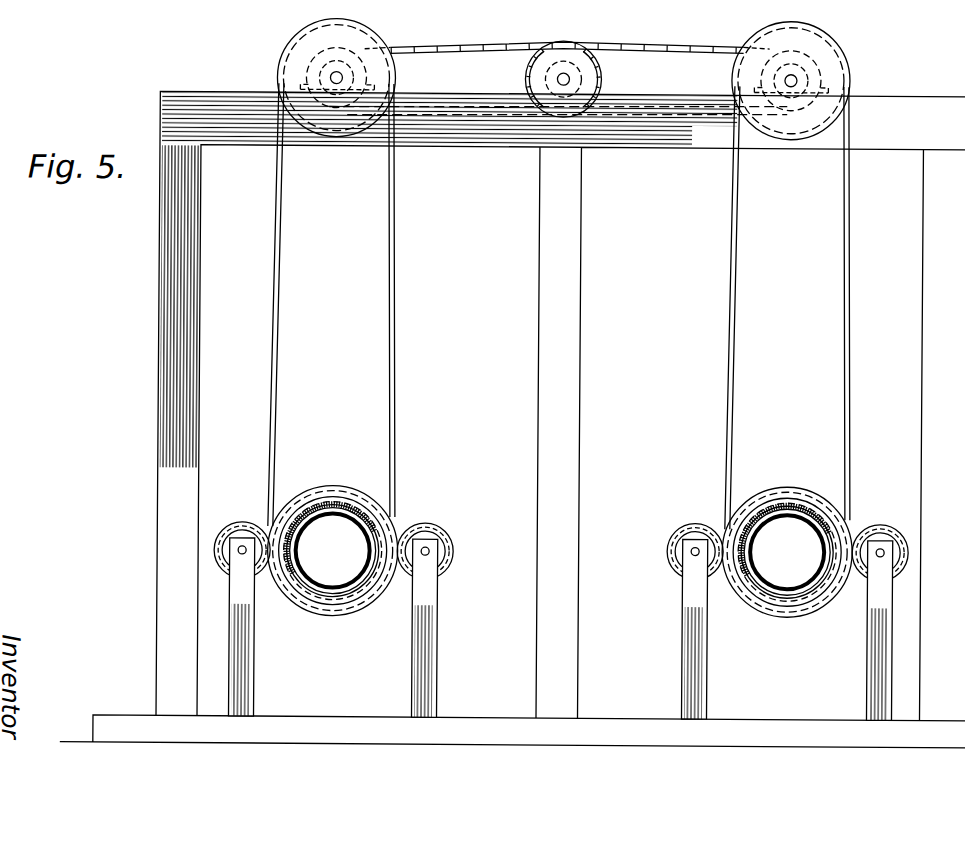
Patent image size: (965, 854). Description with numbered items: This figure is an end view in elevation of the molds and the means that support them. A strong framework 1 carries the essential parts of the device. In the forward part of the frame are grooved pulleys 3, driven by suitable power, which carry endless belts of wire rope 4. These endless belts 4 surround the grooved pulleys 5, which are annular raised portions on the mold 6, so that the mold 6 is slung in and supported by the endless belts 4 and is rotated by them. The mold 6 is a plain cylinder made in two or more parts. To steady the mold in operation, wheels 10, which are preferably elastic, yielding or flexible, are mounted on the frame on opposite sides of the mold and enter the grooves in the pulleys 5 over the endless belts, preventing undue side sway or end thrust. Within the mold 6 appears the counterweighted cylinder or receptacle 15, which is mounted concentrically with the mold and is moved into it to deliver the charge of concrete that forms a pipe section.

The framework 1 is at (921, 99).
The grooved pulley 3 is at (338, 126).
The endless belt of wire rope 4 is at (394, 312).
The grooved pulley 5 is at (345, 493).
The mold 6 is at (320, 494).
The wheel 10 is at (233, 524).
The counterweighted cylinder or receptacle 15 is at (349, 579).